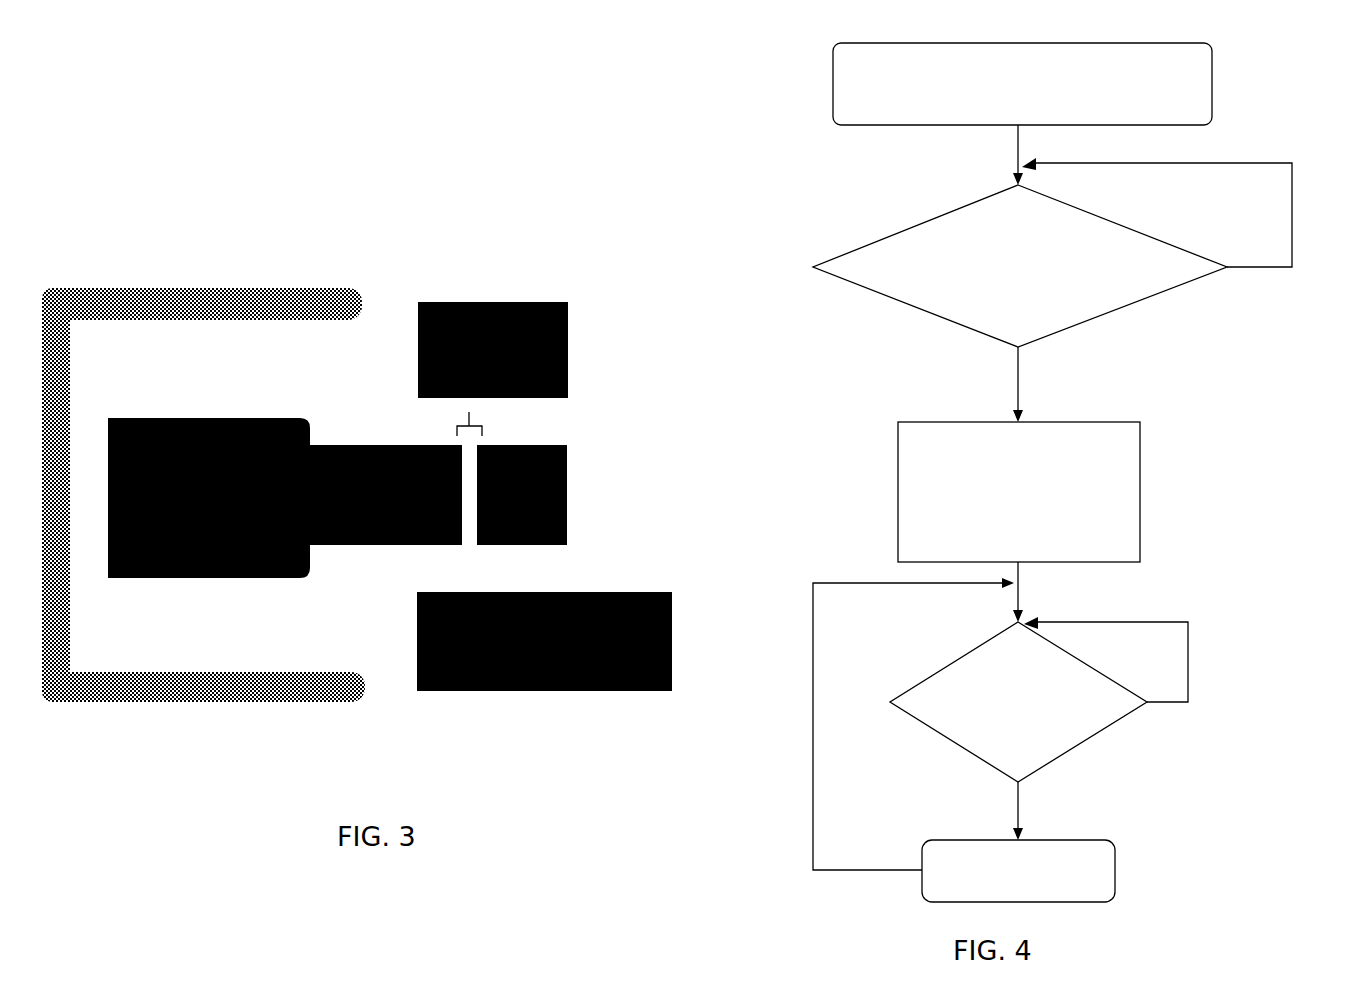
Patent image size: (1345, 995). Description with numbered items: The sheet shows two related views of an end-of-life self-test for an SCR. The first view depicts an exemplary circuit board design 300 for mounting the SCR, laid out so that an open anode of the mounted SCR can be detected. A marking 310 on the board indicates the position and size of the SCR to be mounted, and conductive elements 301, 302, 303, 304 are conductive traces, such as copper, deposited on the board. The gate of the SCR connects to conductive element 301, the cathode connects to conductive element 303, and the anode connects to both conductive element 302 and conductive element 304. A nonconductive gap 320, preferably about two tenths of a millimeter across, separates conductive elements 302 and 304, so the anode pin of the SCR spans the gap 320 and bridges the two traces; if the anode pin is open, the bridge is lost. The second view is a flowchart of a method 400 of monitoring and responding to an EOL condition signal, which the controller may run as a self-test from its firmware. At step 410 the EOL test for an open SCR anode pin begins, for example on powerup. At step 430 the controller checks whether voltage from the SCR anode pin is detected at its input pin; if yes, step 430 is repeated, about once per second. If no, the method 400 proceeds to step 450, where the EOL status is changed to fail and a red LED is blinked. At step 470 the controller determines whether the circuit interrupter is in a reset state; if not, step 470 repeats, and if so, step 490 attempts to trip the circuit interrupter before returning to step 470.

In FIG. 3, the circuit board design 300 is at (207, 222).
In FIG. 3, the marking 310 is at (305, 298).
In FIG. 3, the conductive element 301 is at (568, 317).
In FIG. 3, the conductive element 302 is at (568, 520).
In FIG. 3, the conductive element 303 is at (672, 665).
In FIG. 3, the conductive element 304 is at (267, 405).
In FIG. 3, the nonconductive gap 320 is at (469, 412).
In FIG. 4, the method 400 is at (790, 186).
In FIG. 4, the step 410 is at (1207, 100).
In FIG. 4, the step 430 is at (1178, 292).
In FIG. 4, the step 450 is at (1140, 525).
In FIG. 4, the step 470 is at (1115, 725).
In FIG. 4, the step 490 is at (1115, 858).